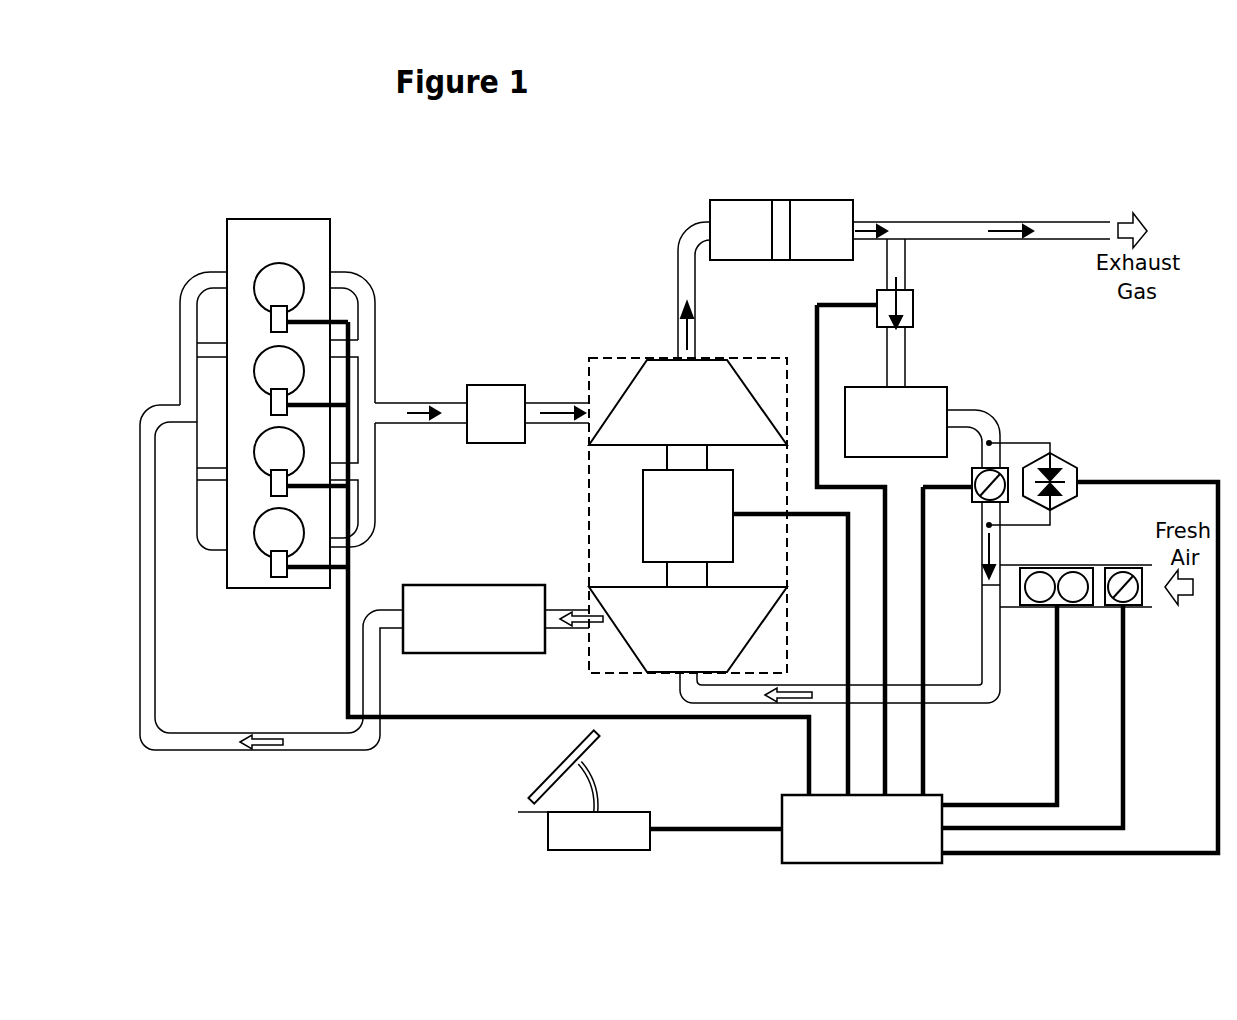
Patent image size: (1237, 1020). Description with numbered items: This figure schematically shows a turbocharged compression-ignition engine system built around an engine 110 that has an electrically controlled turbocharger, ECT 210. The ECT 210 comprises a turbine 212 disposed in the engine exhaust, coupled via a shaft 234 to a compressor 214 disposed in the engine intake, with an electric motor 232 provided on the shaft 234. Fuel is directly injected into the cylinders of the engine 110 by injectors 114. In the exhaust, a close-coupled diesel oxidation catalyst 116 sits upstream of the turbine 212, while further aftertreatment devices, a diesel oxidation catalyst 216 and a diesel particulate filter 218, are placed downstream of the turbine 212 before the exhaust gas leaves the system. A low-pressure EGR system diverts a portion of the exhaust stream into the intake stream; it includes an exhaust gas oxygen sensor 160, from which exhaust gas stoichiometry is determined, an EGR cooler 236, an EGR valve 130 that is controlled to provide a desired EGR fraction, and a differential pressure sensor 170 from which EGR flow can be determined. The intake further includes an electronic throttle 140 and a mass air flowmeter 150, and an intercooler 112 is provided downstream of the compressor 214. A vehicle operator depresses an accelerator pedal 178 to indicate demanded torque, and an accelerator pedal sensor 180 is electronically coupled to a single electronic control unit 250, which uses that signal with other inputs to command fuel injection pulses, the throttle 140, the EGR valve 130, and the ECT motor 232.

The engine 110 is at (227, 250).
The intercooler 112 is at (442, 585).
The injectors 114 is at (270, 323).
The close-coupled diesel oxidation catalyst 116 is at (466, 395).
The EGR valve 130 is at (972, 496).
The electronic throttle 140 is at (1130, 605).
The mass air flowmeter 150 is at (1068, 605).
The exhaust gas oxygen sensor 160 is at (913, 305).
The differential pressure sensor 170 is at (1078, 470).
The accelerator pedal 178 is at (545, 785).
The accelerator pedal sensor 180 is at (650, 825).
The ECT 210 is at (647, 487).
The turbine 212 is at (653, 372).
The compressor 214 is at (637, 595).
The diesel oxidation catalyst 216 is at (740, 198).
The diesel particulate filter 218 is at (818, 198).
The electric motor 232 is at (640, 500).
The shaft 234 is at (710, 455).
The EGR cooler 236 is at (863, 387).
The electronic control unit 250 is at (890, 852).